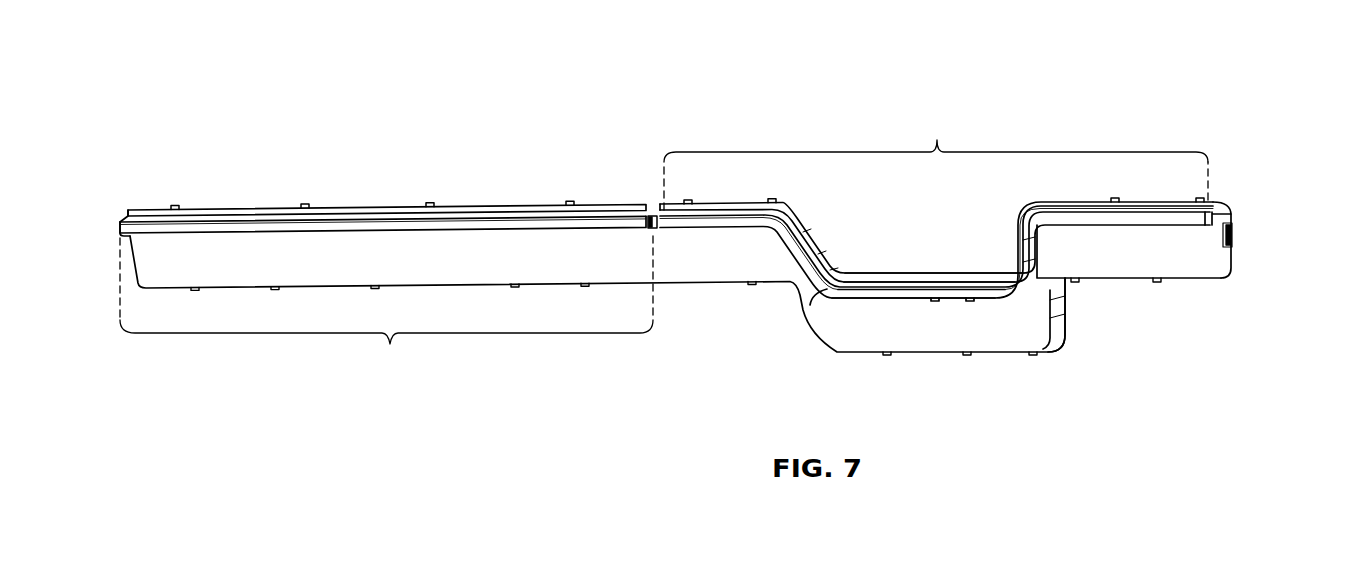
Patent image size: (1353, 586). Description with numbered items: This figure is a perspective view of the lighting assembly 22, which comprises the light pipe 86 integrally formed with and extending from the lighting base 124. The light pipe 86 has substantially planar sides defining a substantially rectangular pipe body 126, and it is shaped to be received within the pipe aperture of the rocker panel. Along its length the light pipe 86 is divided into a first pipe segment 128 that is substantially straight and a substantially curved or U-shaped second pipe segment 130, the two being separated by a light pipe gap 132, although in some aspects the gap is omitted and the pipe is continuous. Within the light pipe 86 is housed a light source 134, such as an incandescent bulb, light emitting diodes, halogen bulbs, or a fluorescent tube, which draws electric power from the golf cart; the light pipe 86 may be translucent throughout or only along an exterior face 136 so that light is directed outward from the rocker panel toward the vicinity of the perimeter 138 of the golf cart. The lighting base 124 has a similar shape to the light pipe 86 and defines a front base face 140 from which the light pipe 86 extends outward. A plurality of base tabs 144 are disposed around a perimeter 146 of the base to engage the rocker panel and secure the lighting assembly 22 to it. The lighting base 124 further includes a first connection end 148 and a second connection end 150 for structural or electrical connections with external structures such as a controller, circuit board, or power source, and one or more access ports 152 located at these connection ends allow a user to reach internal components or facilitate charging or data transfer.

The lighting assembly 22 is at (316, 92).
The light pipe 86 is at (520, 226).
The lighting base 124 is at (1017, 317).
The pipe body 126 is at (628, 215).
The first pipe segment 128 is at (386, 307).
The second pipe segment 130 is at (936, 158).
The light pipe gap 132 is at (659, 231).
The light source 134 is at (228, 228).
The exterior face 136 is at (801, 293).
The perimeter 138 is at (883, 300).
The front base face 140 is at (1178, 250).
The base tabs 144 is at (435, 200).
The perimeter 146 is at (1108, 277).
The first connection end 148 is at (125, 218).
The second connection end 150 is at (1233, 232).
The access ports 152 is at (1237, 243).